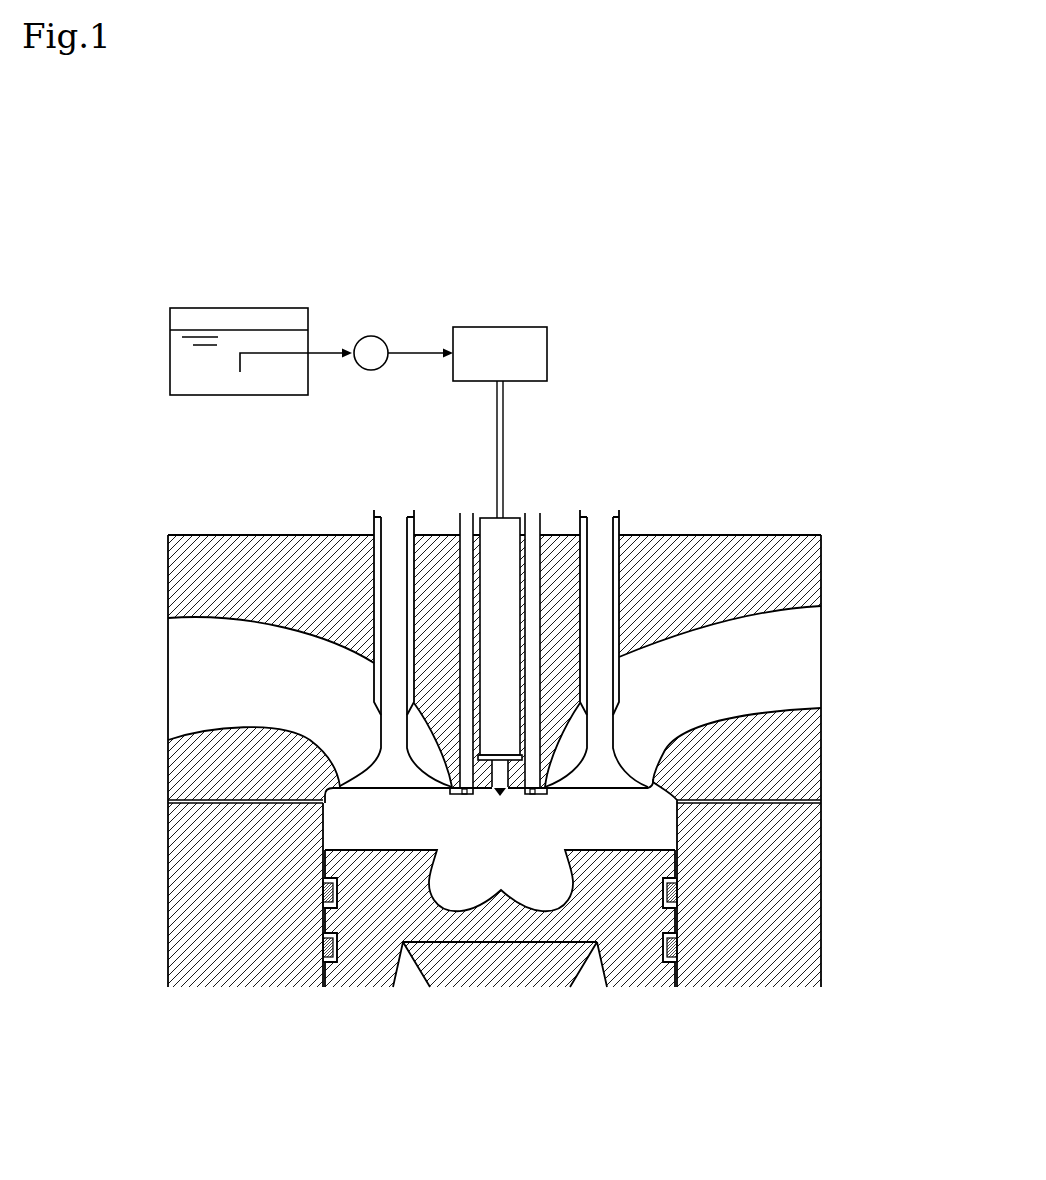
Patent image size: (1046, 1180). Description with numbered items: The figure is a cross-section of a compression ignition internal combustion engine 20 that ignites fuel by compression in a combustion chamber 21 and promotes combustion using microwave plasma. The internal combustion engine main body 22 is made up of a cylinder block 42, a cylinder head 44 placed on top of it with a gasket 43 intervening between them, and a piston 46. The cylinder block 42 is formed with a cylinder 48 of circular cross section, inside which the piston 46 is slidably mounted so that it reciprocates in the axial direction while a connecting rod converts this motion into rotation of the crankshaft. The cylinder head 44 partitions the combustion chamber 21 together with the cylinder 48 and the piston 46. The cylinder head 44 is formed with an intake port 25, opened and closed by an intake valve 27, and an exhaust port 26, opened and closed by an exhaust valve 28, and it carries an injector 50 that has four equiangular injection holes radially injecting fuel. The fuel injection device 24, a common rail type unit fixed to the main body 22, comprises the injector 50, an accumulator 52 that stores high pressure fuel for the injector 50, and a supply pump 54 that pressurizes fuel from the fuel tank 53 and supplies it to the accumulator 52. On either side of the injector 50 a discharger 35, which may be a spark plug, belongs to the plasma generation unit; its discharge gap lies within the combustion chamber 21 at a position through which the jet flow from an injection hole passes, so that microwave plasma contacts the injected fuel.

The internal combustion engine 20 is at (733, 313).
The combustion chamber 21 is at (408, 824).
The internal combustion engine main body 22 is at (812, 534).
The fuel injection device 24 is at (475, 253).
The intake port 25 is at (188, 668).
The exhaust port 26 is at (800, 666).
The intake valve 27 is at (378, 512).
The exhaust valve 28 is at (613, 512).
The discharger 35 is at (466, 795).
The cylinder block 42 is at (822, 880).
The gasket 43 is at (822, 802).
The cylinder head 44 is at (673, 535).
The piston 46 is at (393, 968).
The cylinder 48 is at (335, 826).
The injector 50 is at (485, 518).
The accumulator 52 is at (473, 326).
The fuel tank 53 is at (193, 308).
The supply pump 54 is at (366, 337).